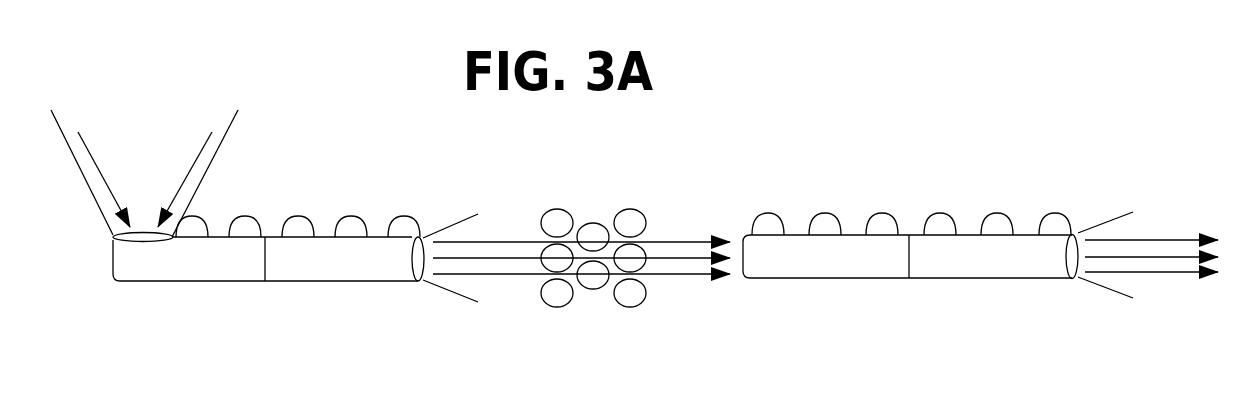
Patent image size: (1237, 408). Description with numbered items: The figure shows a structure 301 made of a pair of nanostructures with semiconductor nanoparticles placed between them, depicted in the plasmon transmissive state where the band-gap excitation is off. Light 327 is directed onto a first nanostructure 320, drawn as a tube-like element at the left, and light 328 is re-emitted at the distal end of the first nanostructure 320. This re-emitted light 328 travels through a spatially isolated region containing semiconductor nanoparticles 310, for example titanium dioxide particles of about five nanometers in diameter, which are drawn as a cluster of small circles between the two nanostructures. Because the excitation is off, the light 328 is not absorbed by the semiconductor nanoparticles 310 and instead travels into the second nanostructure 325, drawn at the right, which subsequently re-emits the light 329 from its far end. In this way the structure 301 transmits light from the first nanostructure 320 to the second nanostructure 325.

The plasmon transmissive structure 301 is at (370, 130).
The light 327 is at (212, 162).
The first nanostructure 320 is at (265, 283).
The re-emitted light 328 is at (447, 228).
The semiconductor nanoparticles 310 is at (595, 302).
The second nanostructure 325 is at (909, 280).
The re-emitted light 329 is at (1093, 225).